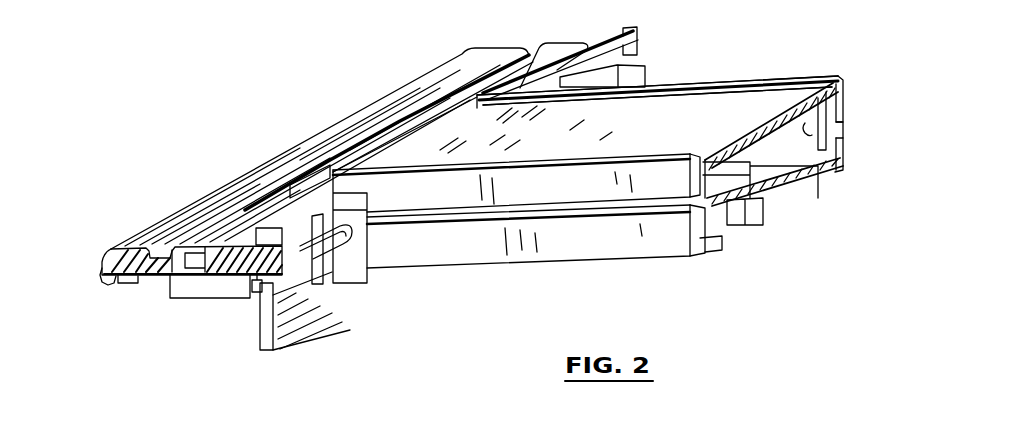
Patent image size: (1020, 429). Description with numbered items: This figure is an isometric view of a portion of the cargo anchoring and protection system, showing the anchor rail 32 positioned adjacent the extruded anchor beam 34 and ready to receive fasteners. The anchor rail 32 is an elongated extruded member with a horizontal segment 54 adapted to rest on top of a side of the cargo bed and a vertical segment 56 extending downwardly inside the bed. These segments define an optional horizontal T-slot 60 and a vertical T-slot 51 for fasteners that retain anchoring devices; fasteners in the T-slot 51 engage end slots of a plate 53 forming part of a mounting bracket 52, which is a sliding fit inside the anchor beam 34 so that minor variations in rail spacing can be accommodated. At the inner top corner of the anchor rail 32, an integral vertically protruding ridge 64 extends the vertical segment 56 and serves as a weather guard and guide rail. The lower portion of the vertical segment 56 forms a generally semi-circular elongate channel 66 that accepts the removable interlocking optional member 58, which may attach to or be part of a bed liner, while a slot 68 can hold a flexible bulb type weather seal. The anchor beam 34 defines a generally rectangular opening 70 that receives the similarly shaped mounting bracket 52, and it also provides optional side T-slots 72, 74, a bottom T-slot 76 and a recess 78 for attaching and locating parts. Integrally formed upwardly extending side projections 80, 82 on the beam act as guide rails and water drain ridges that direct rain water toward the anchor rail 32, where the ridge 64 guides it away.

The anchor rail 32 is at (136, 205).
The anchor beam 34 is at (775, 63).
The vertical T-slot 51 is at (278, 228).
The mounting bracket 52 is at (778, 120).
The plate 53 is at (352, 262).
The horizontal segment 54 is at (133, 280).
The vertical segment 56 is at (250, 292).
The optional member 58 is at (280, 343).
The horizontal T-slot 60 is at (167, 278).
The ridge 64 is at (281, 232).
The channel 66 is at (280, 283).
The slot 68 is at (117, 277).
The rectangular opening 70 is at (838, 115).
The side T-slot 72 is at (645, 212).
The side T-slot 74 is at (838, 130).
The bottom T-slot 76 is at (773, 208).
The recess 78 is at (708, 240).
The side projection 80 is at (600, 156).
The side projection 82 is at (692, 90).